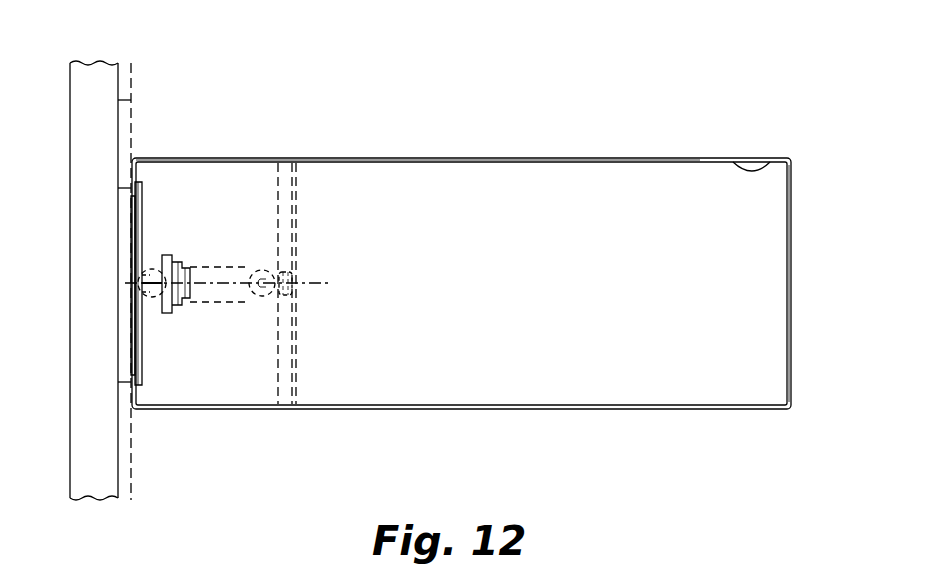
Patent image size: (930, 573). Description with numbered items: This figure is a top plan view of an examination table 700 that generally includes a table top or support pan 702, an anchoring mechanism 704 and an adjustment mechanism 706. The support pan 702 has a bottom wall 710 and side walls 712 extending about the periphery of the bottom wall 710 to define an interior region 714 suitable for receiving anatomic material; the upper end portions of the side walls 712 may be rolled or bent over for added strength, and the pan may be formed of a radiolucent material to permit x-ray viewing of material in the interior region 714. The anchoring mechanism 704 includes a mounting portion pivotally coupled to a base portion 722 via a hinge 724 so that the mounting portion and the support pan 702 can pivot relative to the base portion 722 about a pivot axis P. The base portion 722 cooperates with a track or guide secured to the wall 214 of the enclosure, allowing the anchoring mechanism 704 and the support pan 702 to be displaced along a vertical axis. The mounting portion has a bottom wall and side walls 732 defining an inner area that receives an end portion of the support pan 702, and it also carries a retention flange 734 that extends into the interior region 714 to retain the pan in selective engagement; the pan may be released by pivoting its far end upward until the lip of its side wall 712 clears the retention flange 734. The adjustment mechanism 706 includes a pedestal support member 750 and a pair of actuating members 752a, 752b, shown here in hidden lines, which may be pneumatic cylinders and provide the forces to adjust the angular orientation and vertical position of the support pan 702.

The wall 214 is at (66, 382).
The pivot axis P is at (118, 100).
The examination table 700 is at (645, 112).
The support pan 702 is at (470, 157).
The anchoring mechanism 704 is at (218, 156).
The adjustment mechanism 706 is at (237, 320).
The bottom wall 710 is at (701, 210).
The side walls 712 is at (786, 190).
The interior region 714 is at (613, 289).
The base portion 722 is at (128, 287).
The hinge 724 is at (130, 207).
The side walls 732 is at (250, 158).
The retention flange 734 is at (143, 338).
The pedestal support member 750 is at (152, 252).
The actuating member 752a is at (248, 308).
The actuating member 752b is at (146, 298).